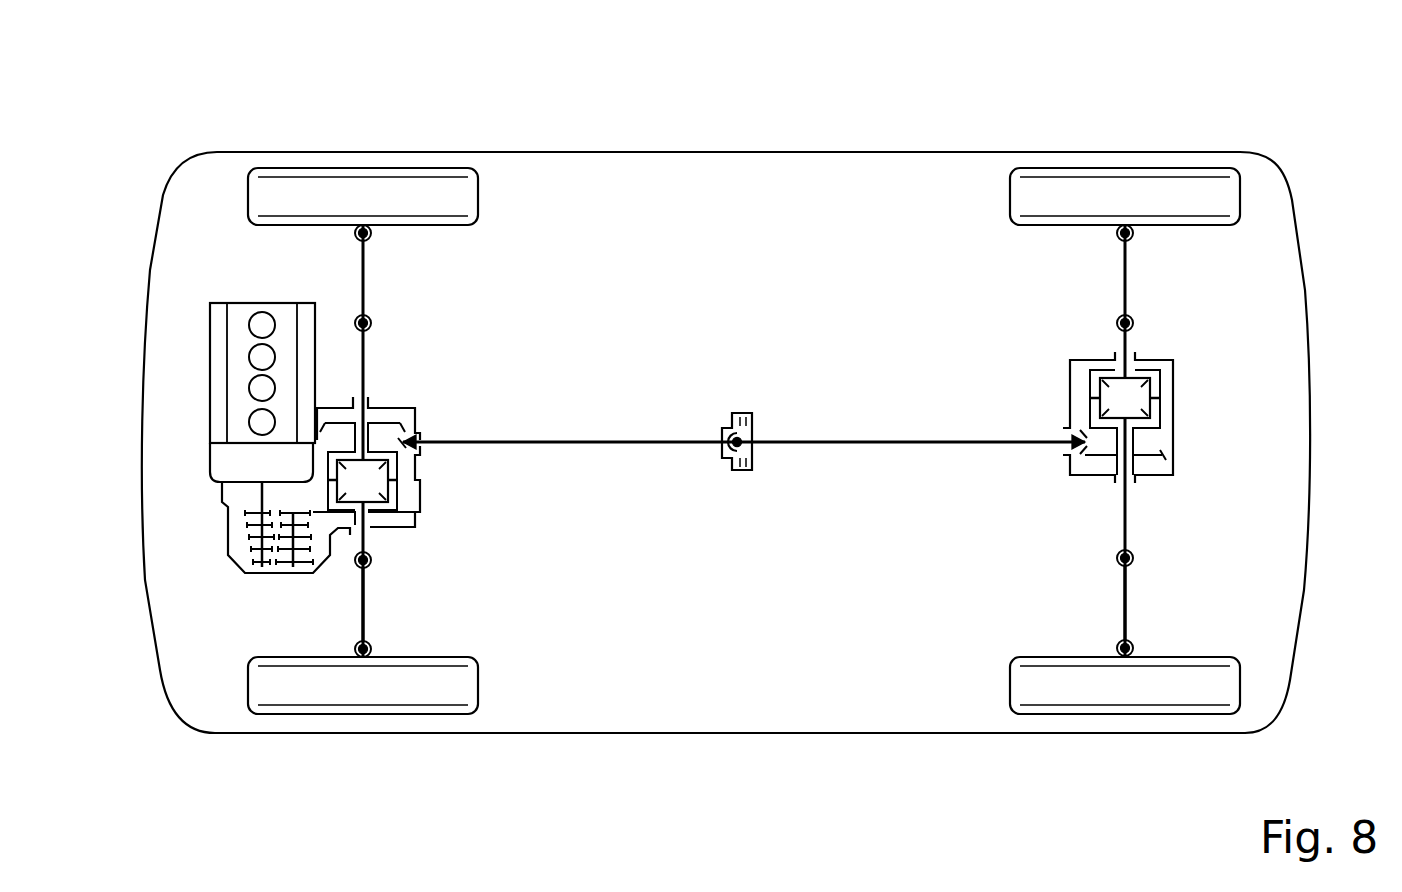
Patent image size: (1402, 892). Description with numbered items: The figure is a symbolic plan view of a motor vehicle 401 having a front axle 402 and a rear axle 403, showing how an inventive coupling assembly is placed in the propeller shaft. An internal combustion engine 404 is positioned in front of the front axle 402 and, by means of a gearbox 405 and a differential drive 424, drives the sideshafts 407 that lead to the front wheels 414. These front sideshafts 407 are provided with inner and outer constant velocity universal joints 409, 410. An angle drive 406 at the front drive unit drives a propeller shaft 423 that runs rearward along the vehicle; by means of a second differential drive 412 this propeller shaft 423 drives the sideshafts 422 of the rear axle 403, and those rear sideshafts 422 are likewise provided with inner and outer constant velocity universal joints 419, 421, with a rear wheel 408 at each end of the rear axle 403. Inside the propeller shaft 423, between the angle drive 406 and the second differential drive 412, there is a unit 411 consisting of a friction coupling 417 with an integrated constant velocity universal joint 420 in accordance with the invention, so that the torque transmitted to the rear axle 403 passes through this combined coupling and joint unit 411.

The motor vehicle 401 is at (660, 140).
The front axle 402 is at (335, 265).
The rear axle 403 is at (1145, 274).
The internal combustion engine 404 is at (216, 387).
The gearbox 405 is at (235, 532).
The angle drive 406 is at (420, 474).
The sideshafts 407 is at (358, 605).
The rear wheel 408 is at (1215, 687).
The inner constant velocity universal joint 409 is at (355, 565).
The outer constant velocity universal joint 410 is at (355, 650).
The unit 411 is at (758, 426).
The second differential drive 412 is at (1173, 417).
The front wheels 414 is at (265, 690).
The friction coupling 417 is at (737, 471).
The inner constant velocity universal joint 419 is at (1133, 556).
The integrated constant velocity universal joint 420 is at (745, 447).
The outer constant velocity universal joint 421 is at (1133, 647).
The sideshafts 422 is at (1127, 605).
The propeller shaft 423 is at (584, 440).
The differential drive 424 is at (397, 497).